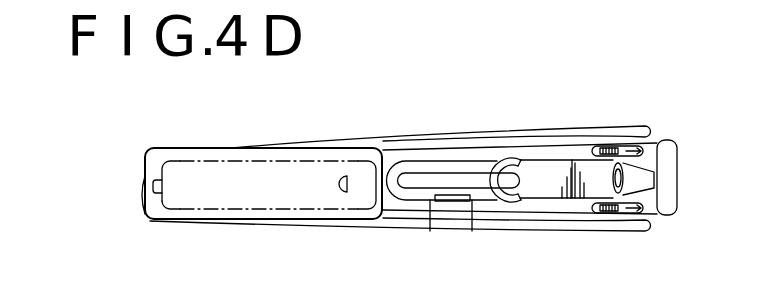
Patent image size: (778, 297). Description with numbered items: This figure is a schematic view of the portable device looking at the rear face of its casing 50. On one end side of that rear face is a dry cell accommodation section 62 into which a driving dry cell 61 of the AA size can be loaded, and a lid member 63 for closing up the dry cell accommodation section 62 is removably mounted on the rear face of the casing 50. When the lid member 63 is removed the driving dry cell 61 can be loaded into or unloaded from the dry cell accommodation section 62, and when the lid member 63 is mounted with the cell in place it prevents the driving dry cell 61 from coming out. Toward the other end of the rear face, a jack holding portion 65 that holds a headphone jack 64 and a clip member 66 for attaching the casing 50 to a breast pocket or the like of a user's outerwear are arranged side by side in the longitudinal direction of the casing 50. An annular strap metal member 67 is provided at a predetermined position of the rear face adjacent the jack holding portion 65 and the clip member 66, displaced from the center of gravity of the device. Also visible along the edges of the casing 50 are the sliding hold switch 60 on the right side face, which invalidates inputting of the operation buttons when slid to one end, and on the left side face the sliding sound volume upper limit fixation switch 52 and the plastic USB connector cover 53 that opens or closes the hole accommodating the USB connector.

The casing 50 is at (348, 227).
The sound volume upper limit fixation switch 52 is at (645, 207).
The USB connector cover 53 is at (447, 207).
The hold switch 60 is at (643, 152).
The driving dry cell 61 is at (198, 150).
The dry cell accommodation section 62 is at (155, 211).
The lid member 63 is at (265, 174).
The headphone jack 64 is at (616, 168).
The jack holding portion 65 is at (543, 188).
The clip member 66 is at (425, 181).
The annular strap metal member 67 is at (514, 161).